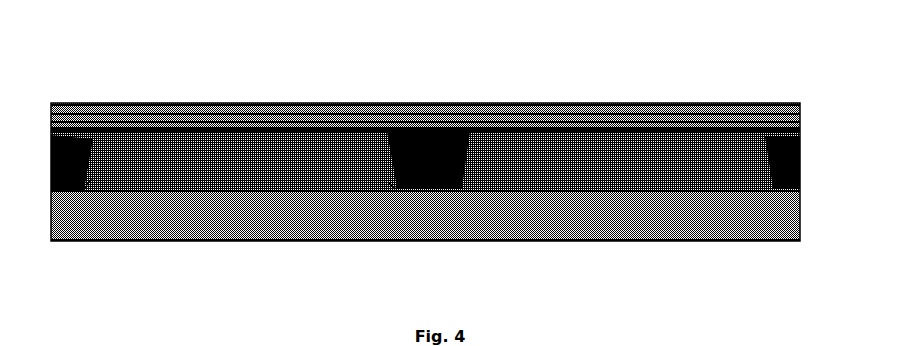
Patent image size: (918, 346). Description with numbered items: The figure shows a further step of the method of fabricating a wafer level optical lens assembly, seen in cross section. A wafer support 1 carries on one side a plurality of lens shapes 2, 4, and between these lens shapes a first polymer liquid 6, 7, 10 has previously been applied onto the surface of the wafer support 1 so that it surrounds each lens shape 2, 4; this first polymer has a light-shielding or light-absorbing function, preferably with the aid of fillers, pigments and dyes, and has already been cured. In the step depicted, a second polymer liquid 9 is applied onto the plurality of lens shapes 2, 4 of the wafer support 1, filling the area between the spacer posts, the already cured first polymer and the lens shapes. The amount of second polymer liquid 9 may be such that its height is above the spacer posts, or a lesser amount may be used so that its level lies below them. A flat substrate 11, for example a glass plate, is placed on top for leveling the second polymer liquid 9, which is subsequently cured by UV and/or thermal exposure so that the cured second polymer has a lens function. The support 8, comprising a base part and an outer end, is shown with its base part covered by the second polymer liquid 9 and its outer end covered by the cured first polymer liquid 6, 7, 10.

The wafer support 1 is at (463, 220).
The lens shape 2 is at (670, 177).
The lens shape 4 is at (220, 173).
The first polymer liquid 6 is at (393, 188).
The first polymer liquid 7 is at (86, 184).
The support 8 is at (73, 135).
The second polymer liquid 9 is at (135, 133).
The first polymer liquid 10 is at (802, 190).
The flat substrate 11 is at (738, 112).